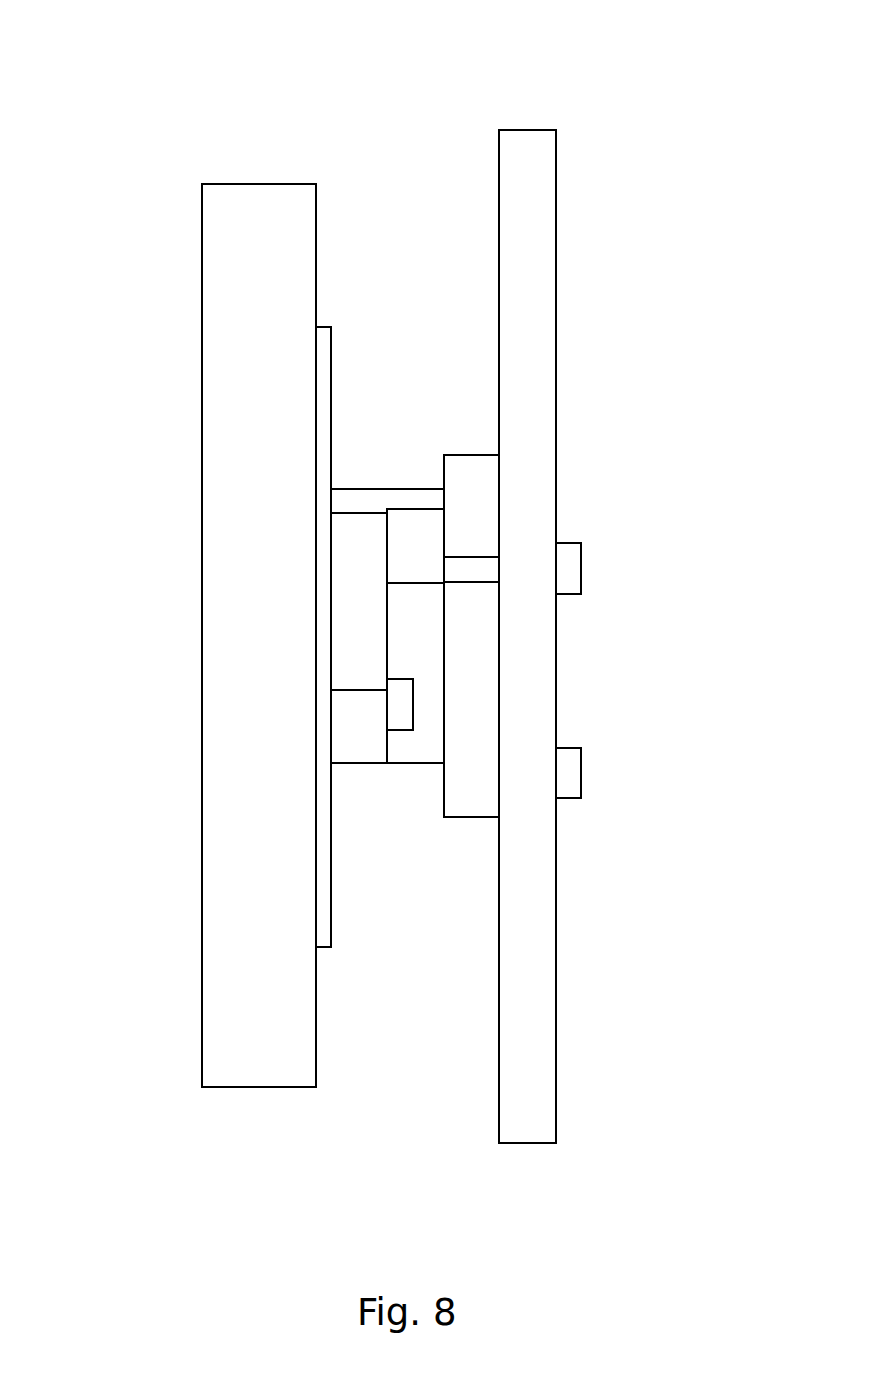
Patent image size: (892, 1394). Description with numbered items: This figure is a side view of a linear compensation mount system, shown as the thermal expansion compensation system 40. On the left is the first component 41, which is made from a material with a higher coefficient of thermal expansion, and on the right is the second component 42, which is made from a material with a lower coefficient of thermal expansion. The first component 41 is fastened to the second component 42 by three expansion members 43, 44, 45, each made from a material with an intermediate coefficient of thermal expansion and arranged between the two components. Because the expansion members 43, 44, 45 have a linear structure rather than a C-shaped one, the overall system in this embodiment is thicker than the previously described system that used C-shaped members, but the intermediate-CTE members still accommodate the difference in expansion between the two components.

The thermal expansion compensation system 40 is at (165, 120).
The first component 41 is at (338, 333).
The second component 42 is at (527, 365).
The expansion member 43 is at (367, 583).
The expansion member 44 is at (426, 627).
The expansion member 45 is at (470, 613).